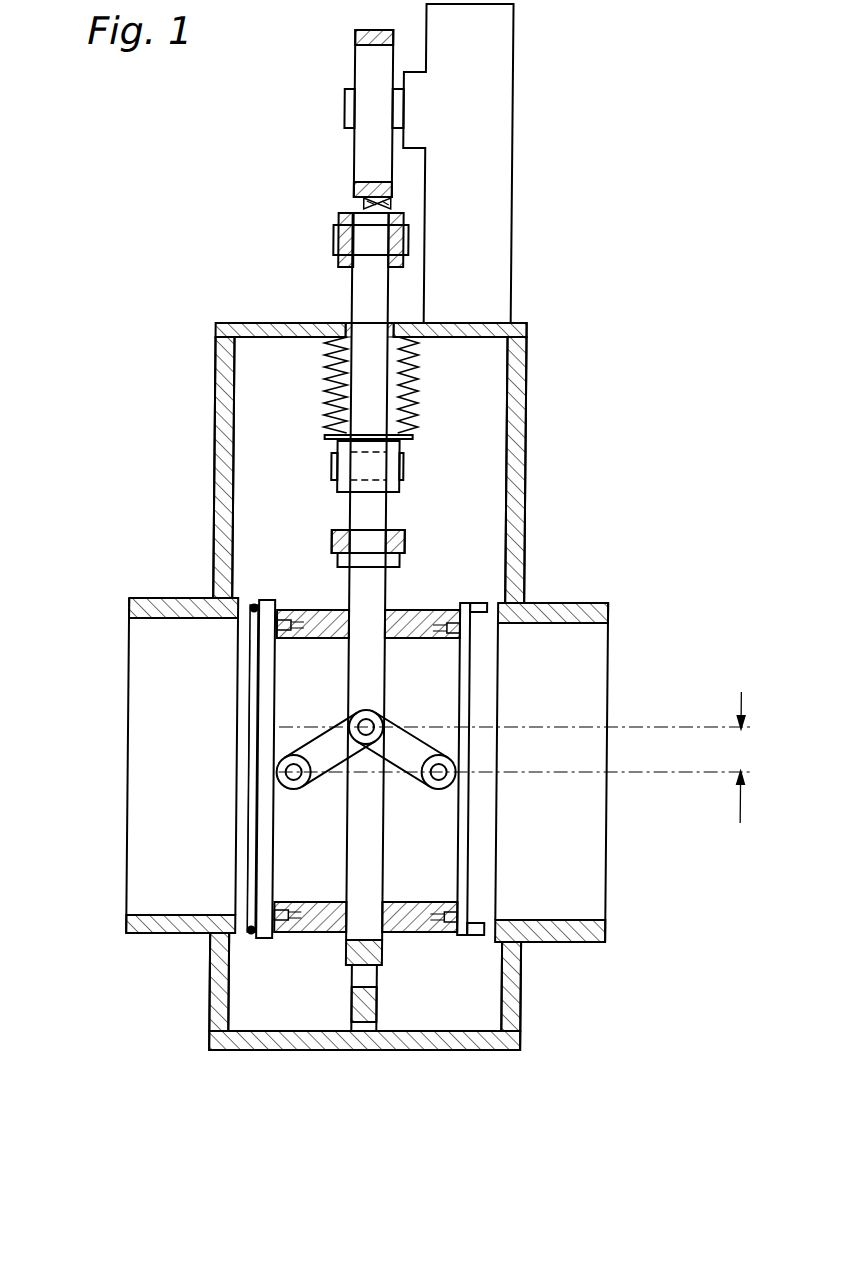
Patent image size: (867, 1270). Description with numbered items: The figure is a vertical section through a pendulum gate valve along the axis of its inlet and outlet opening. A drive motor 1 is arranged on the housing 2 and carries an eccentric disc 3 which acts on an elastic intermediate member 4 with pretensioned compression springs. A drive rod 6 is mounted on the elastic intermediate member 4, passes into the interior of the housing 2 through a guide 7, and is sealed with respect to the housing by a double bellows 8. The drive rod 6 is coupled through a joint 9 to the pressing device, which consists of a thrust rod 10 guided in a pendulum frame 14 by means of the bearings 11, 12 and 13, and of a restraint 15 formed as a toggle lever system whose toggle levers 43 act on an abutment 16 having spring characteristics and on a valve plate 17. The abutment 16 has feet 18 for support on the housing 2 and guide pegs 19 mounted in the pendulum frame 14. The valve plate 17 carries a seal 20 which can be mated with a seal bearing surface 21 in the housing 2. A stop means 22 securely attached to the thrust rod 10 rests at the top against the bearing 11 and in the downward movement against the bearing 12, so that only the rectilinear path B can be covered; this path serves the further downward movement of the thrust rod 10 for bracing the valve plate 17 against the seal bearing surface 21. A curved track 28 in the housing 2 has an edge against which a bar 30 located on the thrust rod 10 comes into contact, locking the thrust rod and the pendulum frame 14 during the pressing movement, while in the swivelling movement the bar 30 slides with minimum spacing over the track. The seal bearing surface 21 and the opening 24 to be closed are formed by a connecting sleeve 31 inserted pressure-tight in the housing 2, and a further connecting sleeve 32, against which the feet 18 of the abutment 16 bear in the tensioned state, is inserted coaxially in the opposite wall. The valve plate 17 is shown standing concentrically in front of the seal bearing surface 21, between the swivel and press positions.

The drive motor 1 is at (497, 68).
The housing 2 is at (527, 355).
The eccentric disc 3 is at (373, 67).
The elastic intermediate member 4 is at (347, 198).
The drive rod 6 is at (372, 292).
The guide 7 is at (402, 310).
The double bellows 8 is at (330, 385).
The joint 9 is at (377, 463).
The thrust rod 10 is at (372, 592).
The bearing 11 is at (405, 540).
The bearing 12 is at (287, 610).
The bearing 13 is at (331, 909).
The pendulum frame 14 is at (423, 640).
The restraint 15 is at (289, 736).
The abutment 16 is at (463, 905).
The valve plate 17 is at (265, 822).
The feet 18 is at (482, 613).
The guide pegs 19 is at (290, 618).
The seal 20 is at (253, 665).
The seal bearing surface 21 is at (243, 937).
The stop means 22 is at (334, 619).
The opening 24 is at (200, 772).
The curved track 28 is at (376, 1010).
The bar 30 is at (354, 965).
The connecting sleeve 31 is at (147, 927).
The connecting sleeve 32 is at (606, 608).
The toggle levers 43 is at (322, 760).
The path B is at (515, 757).